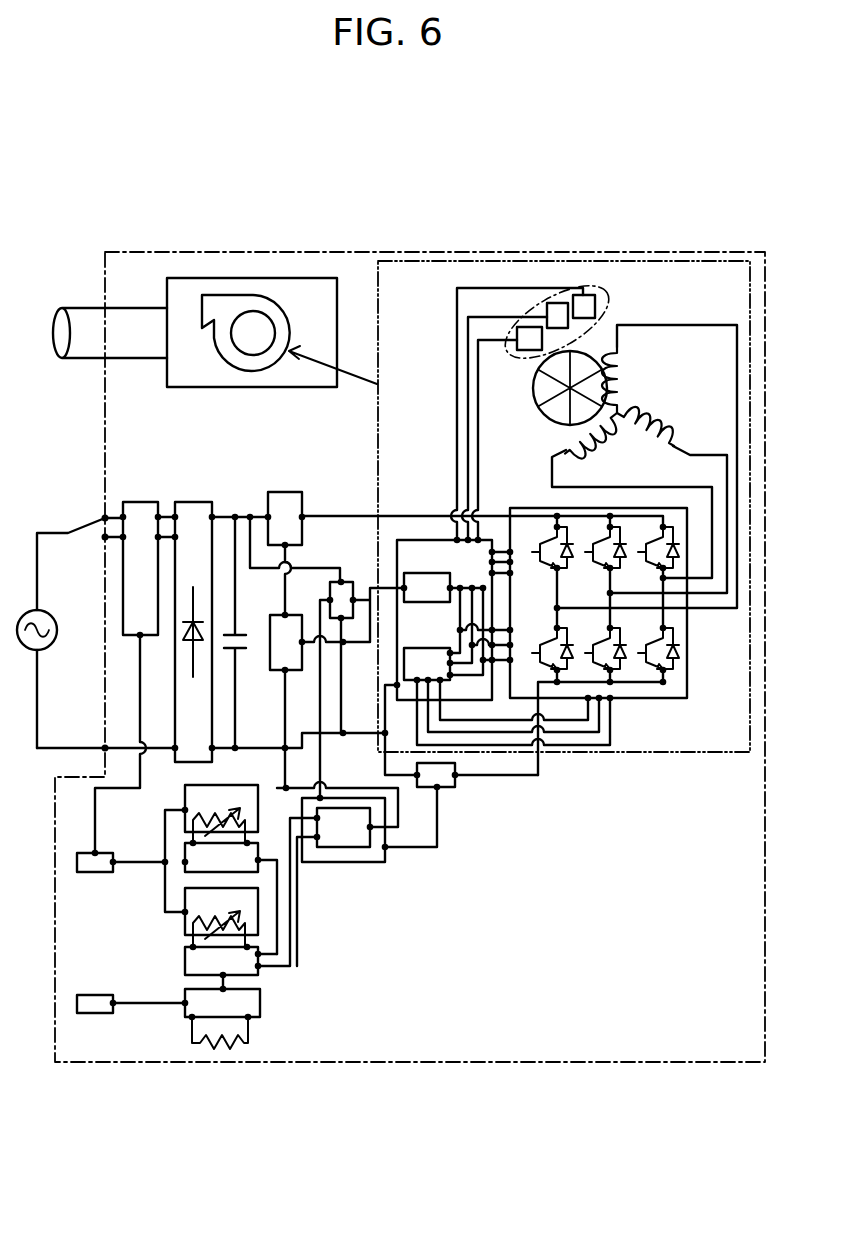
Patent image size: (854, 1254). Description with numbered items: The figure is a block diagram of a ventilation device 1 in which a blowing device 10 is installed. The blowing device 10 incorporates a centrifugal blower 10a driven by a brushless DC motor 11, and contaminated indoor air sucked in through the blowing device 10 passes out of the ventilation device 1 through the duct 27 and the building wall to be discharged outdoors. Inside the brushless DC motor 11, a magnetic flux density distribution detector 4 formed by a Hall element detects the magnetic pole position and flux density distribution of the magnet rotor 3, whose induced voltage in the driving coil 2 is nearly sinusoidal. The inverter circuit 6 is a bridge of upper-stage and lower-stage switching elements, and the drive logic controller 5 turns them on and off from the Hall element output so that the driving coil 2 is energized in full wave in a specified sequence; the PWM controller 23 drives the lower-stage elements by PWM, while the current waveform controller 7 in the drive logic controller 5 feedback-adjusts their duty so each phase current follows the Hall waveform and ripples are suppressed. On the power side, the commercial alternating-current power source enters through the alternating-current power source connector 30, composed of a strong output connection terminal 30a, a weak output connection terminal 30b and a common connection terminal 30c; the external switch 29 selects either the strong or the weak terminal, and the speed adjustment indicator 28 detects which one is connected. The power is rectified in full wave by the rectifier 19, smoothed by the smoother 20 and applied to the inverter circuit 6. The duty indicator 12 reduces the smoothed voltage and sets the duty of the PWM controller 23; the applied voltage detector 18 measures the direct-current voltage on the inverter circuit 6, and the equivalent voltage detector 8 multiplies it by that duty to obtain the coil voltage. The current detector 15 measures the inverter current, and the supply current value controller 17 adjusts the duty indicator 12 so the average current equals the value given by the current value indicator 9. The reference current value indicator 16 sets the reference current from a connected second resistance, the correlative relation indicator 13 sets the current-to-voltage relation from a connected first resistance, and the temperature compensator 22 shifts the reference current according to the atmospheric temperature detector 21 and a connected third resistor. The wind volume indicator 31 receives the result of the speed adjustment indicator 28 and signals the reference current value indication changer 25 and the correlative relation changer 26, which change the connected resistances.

The ventilation device 1 is at (228, 193).
The blowing device 10 is at (207, 247).
The centrifugal blower 10a is at (255, 295).
The duct 27 is at (72, 307).
The brushless DC motor 11 is at (683, 754).
The magnetic flux density distribution detector 4 is at (607, 297).
The magnet rotor 3 is at (537, 400).
The driving coil 2 is at (614, 432).
The inverter circuit 6 is at (690, 677).
The drive logic controller 5 is at (490, 687).
The PWM controller 23 is at (418, 572).
The current waveform controller 7 is at (442, 668).
The duty indicator 12 is at (345, 578).
The equivalent voltage detector 8 is at (297, 612).
The applied voltage detector 18 is at (282, 492).
The rectifier 19 is at (183, 502).
The smoother 20 is at (230, 625).
The speed adjustment indicator 28 is at (122, 590).
The external switch 29 is at (80, 525).
The alternating-current power source connector 30 is at (106, 535).
The strong output connection terminal 30a is at (109, 512).
The weak output connection terminal 30b is at (103, 540).
The common connection terminal 30c is at (105, 746).
The wind volume indicator 31 is at (93, 873).
The correlative relation changer 26 is at (222, 785).
The correlative relation indicator 13 is at (183, 868).
The reference current value indication changer 25 is at (183, 923).
The reference current value indicator 16 is at (260, 973).
The temperature compensator 22 is at (260, 1010).
The atmospheric temperature detector 21 is at (88, 1014).
The current value indicator 9 is at (353, 848).
The supply current value controller 17 is at (385, 862).
The current detector 15 is at (447, 788).